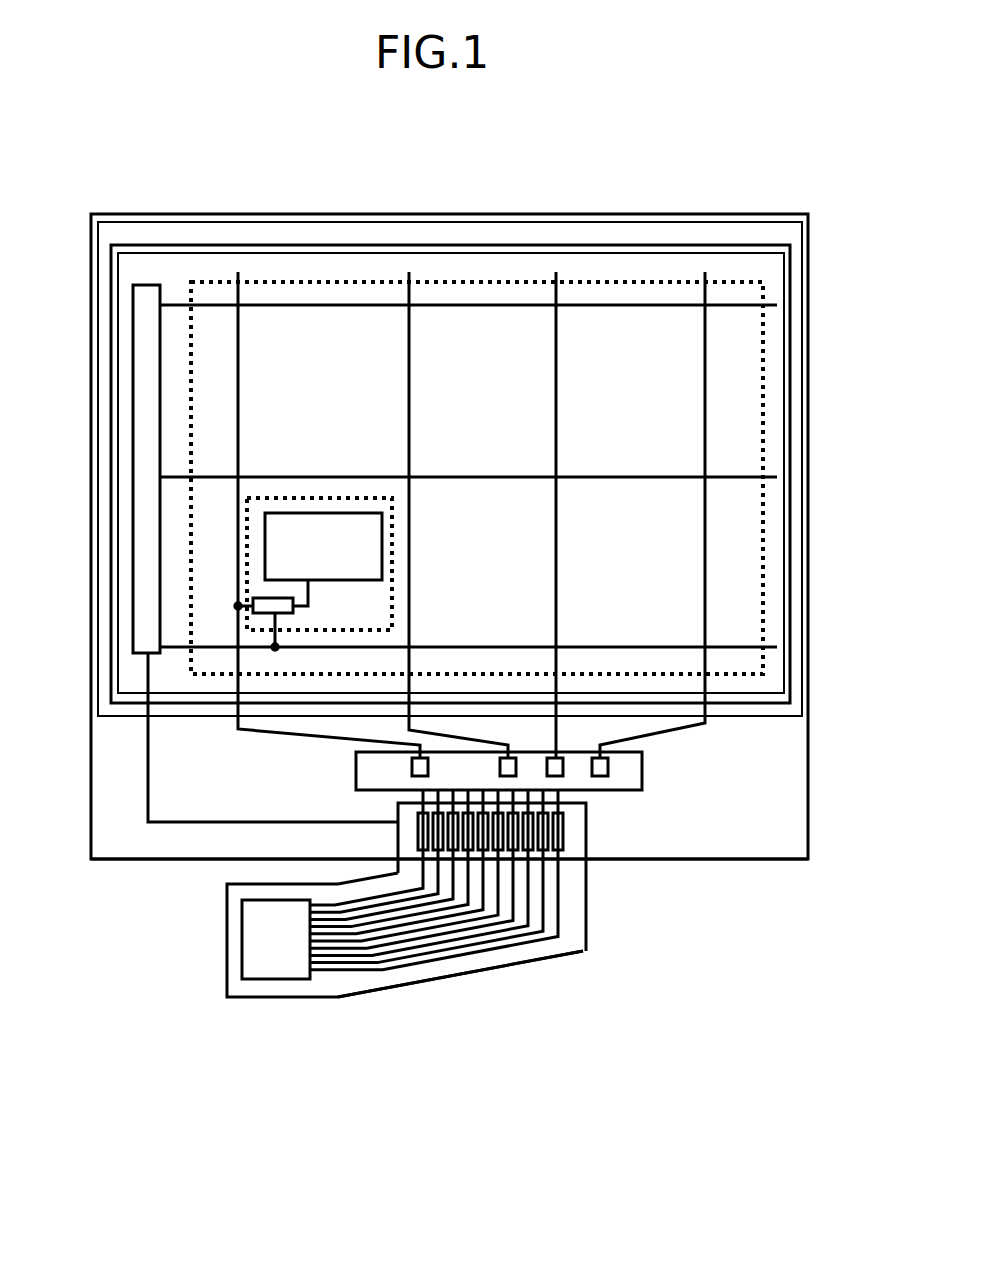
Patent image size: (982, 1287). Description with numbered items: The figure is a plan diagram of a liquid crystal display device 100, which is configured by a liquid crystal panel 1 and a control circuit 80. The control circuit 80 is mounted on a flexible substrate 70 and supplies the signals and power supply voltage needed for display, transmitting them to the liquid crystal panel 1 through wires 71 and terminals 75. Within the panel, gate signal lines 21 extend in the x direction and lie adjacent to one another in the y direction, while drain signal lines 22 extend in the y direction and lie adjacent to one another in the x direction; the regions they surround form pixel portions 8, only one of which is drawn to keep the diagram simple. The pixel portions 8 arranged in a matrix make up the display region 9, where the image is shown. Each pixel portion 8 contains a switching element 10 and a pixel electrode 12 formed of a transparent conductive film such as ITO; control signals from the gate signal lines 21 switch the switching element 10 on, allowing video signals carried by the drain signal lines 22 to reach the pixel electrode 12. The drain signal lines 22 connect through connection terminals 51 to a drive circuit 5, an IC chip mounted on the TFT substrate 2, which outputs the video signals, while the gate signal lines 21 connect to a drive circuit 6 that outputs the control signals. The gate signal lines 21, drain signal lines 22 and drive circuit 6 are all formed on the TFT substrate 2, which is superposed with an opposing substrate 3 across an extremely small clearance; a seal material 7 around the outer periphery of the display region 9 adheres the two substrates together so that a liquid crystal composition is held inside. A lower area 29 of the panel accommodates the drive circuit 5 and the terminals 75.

The liquid crystal panel 1 is at (467, 212).
The TFT substrate 2 is at (187, 213).
The opposing substrate 3 is at (242, 246).
The drive circuit 5 is at (623, 768).
The drive circuit 6 is at (141, 288).
The seal material 7 is at (332, 253).
The pixel portion 8 is at (393, 530).
The display region 9 is at (612, 282).
The switching element 10 is at (297, 612).
The pixel electrode 12 is at (335, 552).
The gate signal lines 21 is at (468, 477).
The drain signal lines 22 is at (243, 390).
The terminal region 29 is at (723, 826).
The connection terminals 51 is at (605, 778).
The flexible substrate 70 is at (420, 985).
The wires 71 is at (478, 952).
The terminals 75 is at (420, 835).
The control circuit 80 is at (268, 960).
The liquid crystal display device 100 is at (533, 1047).